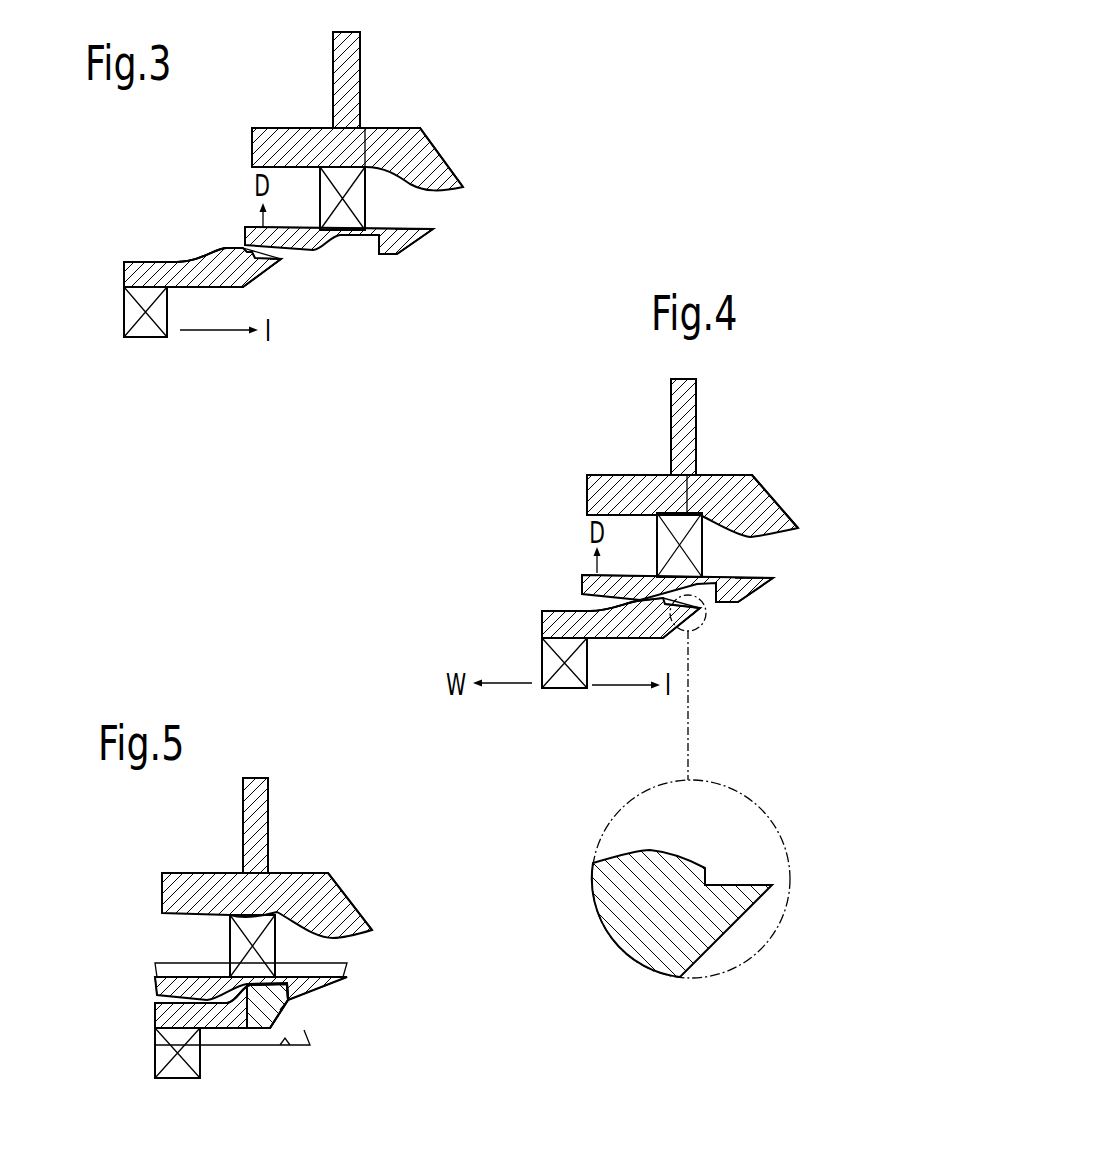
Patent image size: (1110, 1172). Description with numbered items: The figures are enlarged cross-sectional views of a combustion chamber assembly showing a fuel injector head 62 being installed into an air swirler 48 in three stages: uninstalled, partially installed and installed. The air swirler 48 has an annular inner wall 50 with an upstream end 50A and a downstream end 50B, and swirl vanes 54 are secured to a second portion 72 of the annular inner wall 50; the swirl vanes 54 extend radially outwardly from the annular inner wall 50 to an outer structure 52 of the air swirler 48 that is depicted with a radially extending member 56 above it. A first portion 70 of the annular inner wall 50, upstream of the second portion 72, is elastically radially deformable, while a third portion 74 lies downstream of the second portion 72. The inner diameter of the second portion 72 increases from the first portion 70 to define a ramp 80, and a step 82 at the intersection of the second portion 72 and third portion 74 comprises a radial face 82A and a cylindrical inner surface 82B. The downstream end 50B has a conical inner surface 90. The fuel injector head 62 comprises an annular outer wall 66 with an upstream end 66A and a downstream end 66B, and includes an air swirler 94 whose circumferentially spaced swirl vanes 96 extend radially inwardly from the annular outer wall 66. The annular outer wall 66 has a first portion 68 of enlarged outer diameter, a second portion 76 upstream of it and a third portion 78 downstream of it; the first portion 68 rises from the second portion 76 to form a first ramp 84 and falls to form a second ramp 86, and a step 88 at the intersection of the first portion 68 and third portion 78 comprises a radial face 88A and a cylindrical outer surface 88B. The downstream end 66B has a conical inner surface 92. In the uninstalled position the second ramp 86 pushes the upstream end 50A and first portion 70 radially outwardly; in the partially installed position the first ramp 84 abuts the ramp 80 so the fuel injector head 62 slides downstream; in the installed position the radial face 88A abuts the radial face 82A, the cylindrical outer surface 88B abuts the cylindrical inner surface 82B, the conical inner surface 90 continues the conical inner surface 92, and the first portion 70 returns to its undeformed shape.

In FIG. 3, the air swirler 48 is at (493, 160).
In FIG. 4, the air swirler 48 is at (798, 504).
In FIG. 5, the air swirler 48 is at (123, 891).
In FIG. 3, the annular inner wall 50 is at (305, 237).
In FIG. 4, the annular inner wall 50 is at (623, 587).
In FIG. 5, the annular inner wall 50 is at (157, 977).
In FIG. 3, the upstream end 50A is at (247, 228).
In FIG. 4, the upstream end 50A is at (582, 575).
In FIG. 5, the upstream end 50A is at (157, 985).
In FIG. 3, the downstream end 50B is at (433, 230).
In FIG. 4, the downstream end 50B is at (773, 578).
In FIG. 5, the downstream end 50B is at (347, 977).
In FIG. 3, the tool head 52 is at (413, 133).
In FIG. 4, the tool head 52 is at (752, 485).
In FIG. 5, the tool head 52 is at (327, 890).
In FIG. 3, the swirl vanes 54 is at (364, 183).
In FIG. 4, the swirl vanes 54 is at (687, 520).
In FIG. 5, the swirl vanes 54 is at (230, 930).
In FIG. 3, the tool shank 56 is at (361, 59).
In FIG. 4, the tool shank 56 is at (697, 406).
In FIG. 5, the tool shank 56 is at (263, 813).
In FIG. 3, the fuel injector head 62 is at (107, 208).
In FIG. 4, the fuel injector head 62 is at (457, 575).
In FIG. 5, the fuel injector head 62 is at (89, 994).
In FIG. 3, the annular outer wall 66 is at (177, 273).
In FIG. 4, the annular outer wall 66 is at (592, 632).
In FIG. 5, the annular outer wall 66 is at (192, 1017).
In FIG. 3, the upstream end 66A is at (127, 275).
In FIG. 4, the upstream end 66A is at (542, 628).
In FIG. 5, the upstream end 66A is at (155, 1018).
In FIG. 3, the downstream end 66B is at (246, 262).
In FIG. 4, the downstream end 66B is at (707, 612).
In FIG. 5, the downstream end 66B is at (293, 1003).
In FIG. 3, the first portion 68 is at (240, 262).
In FIG. 4, the first portion 68 is at (650, 633).
In FIG. 5, the first portion 68 is at (260, 1047).
In FIG. 3, the first portion 70 is at (253, 220).
In FIG. 4, the first portion 70 is at (590, 573).
In FIG. 5, the first portion 70 is at (177, 963).
In FIG. 3, the second portion 72 is at (352, 228).
In FIG. 4, the second portion 72 is at (676, 562).
In FIG. 5, the second portion 72 is at (242, 973).
In FIG. 3, the third portion 74 is at (398, 237).
In FIG. 4, the third portion 74 is at (745, 575).
In FIG. 5, the third portion 74 is at (325, 963).
In FIG. 3, the second portion 76 is at (147, 268).
In FIG. 4, the second portion 76 is at (587, 610).
In FIG. 5, the second portion 76 is at (207, 1047).
In FIG. 3, the third portion 78 is at (271, 263).
In FIG. 4, the third portion 78 is at (697, 614).
In FIG. 5, the third portion 78 is at (298, 1047).
In FIG. 3, the ramp 80 is at (370, 254).
In FIG. 3, the step 82 is at (382, 254).
In FIG. 4, the step 82 is at (714, 604).
In FIG. 5, the step 82 is at (313, 990).
In FIG. 3, the radial face 82A is at (377, 253).
In FIG. 3, the cylindrical inner surface 82B is at (390, 256).
In FIG. 3, the first ramp 84 is at (207, 252).
In FIG. 4, the first ramp 84 is at (638, 610).
In FIG. 5, the first ramp 84 is at (235, 1040).
In FIG. 3, the second ramp 86 is at (240, 255).
In FIG. 4, the second ramp 86 is at (638, 597).
In FIG. 5, the second ramp 86 is at (270, 1035).
In FIG. 4, the step 88 is at (747, 907).
In FIG. 5, the step 88 is at (290, 1022).
In FIG. 3, the radial face 88A is at (270, 258).
In FIG. 4, the radial face 88A is at (707, 873).
In FIG. 4, the cylindrical outer surface 88B is at (703, 605).
In FIG. 3, the conical inner surface 90 is at (428, 246).
In FIG. 4, the conical inner surface 90 is at (757, 595).
In FIG. 5, the conical inner surface 90 is at (337, 982).
In FIG. 3, the conical inner surface 92 is at (275, 268).
In FIG. 4, the conical inner surface 92 is at (685, 633).
In FIG. 5, the conical inner surface 92 is at (297, 1010).
In FIG. 3, the air swirler 94 is at (116, 344).
In FIG. 4, the air swirler 94 is at (541, 699).
In FIG. 5, the air swirler 94 is at (158, 1086).
In FIG. 3, the swirl vanes 96 is at (125, 303).
In FIG. 5, the swirl vanes 96 is at (155, 1067).